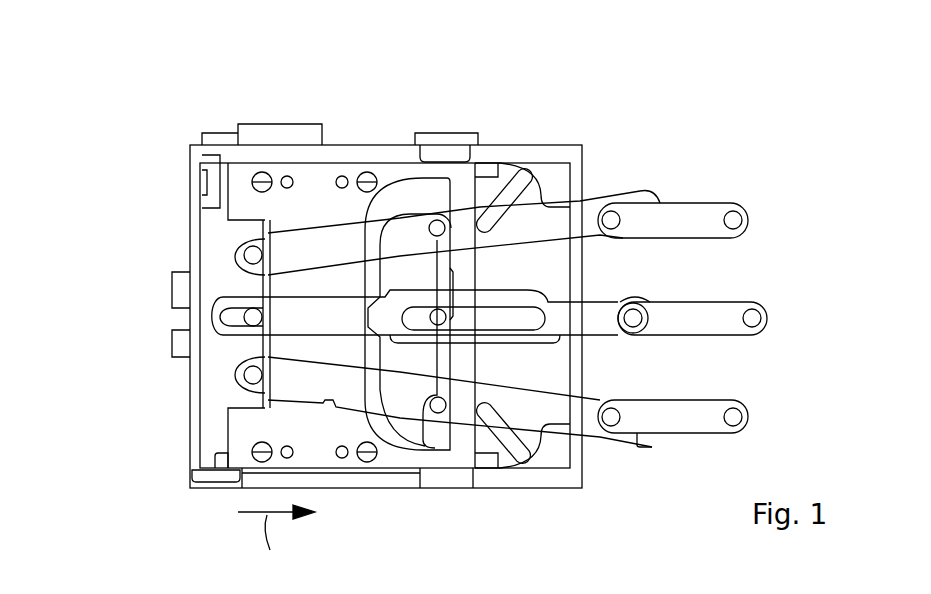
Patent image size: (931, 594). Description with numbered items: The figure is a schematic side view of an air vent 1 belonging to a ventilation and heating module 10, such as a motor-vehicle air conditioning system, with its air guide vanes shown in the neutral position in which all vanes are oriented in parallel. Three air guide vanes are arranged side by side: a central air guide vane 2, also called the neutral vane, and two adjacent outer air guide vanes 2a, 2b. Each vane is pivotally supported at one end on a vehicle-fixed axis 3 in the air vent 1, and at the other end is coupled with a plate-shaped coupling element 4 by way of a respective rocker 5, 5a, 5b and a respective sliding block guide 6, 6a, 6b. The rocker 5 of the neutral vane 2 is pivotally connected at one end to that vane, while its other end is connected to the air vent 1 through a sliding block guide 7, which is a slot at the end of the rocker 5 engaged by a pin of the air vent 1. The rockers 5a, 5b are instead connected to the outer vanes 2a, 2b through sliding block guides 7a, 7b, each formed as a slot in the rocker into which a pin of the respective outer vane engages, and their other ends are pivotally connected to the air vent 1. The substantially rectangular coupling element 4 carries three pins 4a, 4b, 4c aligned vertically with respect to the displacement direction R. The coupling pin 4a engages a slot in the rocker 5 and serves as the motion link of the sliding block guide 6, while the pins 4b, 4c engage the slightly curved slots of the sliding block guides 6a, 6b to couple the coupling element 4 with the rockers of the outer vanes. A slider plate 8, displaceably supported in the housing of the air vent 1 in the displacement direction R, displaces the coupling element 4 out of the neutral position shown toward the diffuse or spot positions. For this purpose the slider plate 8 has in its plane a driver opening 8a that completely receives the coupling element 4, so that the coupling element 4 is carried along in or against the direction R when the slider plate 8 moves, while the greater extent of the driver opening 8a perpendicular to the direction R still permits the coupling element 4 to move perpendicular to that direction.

The ventilation and heating module 10 is at (152, 112).
The air vent 1 is at (362, 130).
The central air guide vane 2 is at (693, 312).
The outer air guide vane 2a is at (698, 430).
The outer air guide vane 2b is at (698, 212).
The vehicle-fixed axis 3 is at (735, 221).
The coupling element 4 is at (418, 283).
The coupling pin 4a is at (440, 320).
The pin 4b is at (437, 440).
The pin 4c is at (437, 220).
The rocker 5 is at (602, 310).
The rocker 5a is at (602, 436).
The rocker 5b is at (602, 201).
The sliding block guide 6 is at (530, 303).
The sliding block guide 6a is at (513, 465).
The sliding block guide 6b is at (510, 168).
The sliding block guide 7 is at (225, 303).
The sliding block guide 7a is at (647, 437).
The sliding block guide 7b is at (648, 195).
The slider plate 8 is at (318, 209).
The driver opening 8a is at (400, 440).